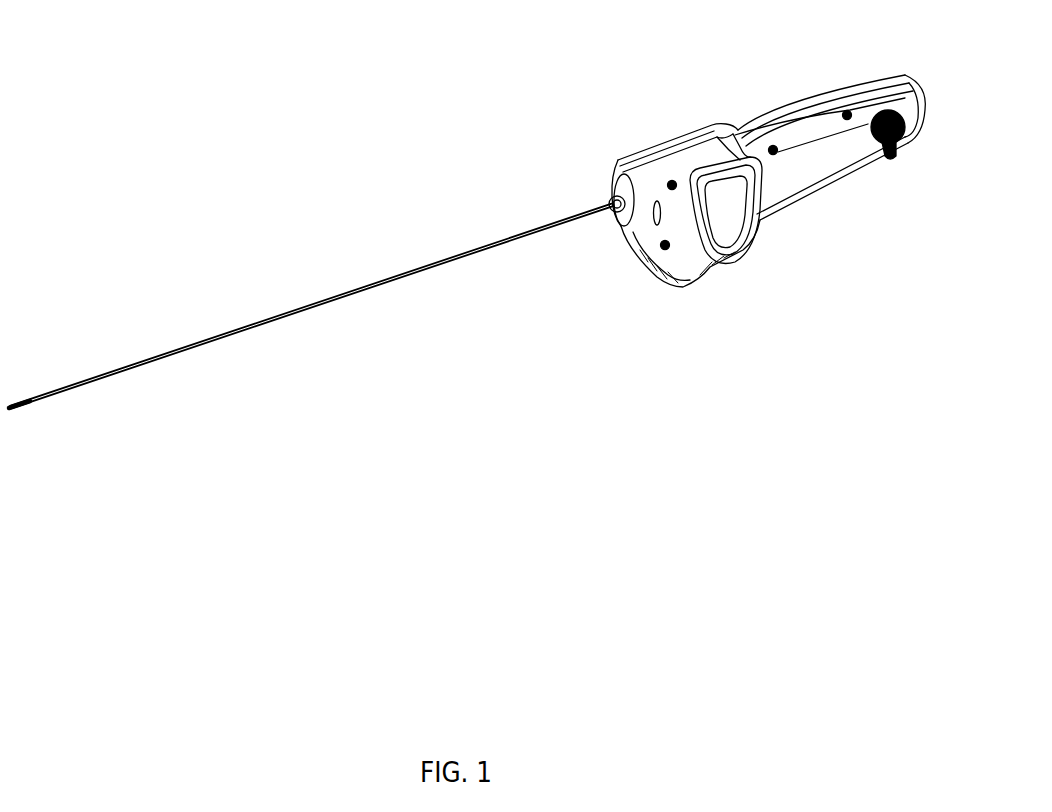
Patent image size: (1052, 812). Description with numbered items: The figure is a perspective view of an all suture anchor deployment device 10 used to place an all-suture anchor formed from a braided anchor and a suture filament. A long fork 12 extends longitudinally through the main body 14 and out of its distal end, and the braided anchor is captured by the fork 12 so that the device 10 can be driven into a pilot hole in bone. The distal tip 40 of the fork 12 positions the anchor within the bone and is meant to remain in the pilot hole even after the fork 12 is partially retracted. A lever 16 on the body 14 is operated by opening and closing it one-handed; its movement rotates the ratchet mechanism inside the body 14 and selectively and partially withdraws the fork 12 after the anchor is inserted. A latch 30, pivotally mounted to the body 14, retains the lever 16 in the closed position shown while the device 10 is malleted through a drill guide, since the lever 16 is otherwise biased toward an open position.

The all suture anchor deployment device 10 is at (432, 102).
The fork 12 is at (123, 368).
The main body 14 is at (666, 138).
The lever 16 is at (850, 173).
The latch 30 is at (893, 160).
The tip 40 is at (14, 406).